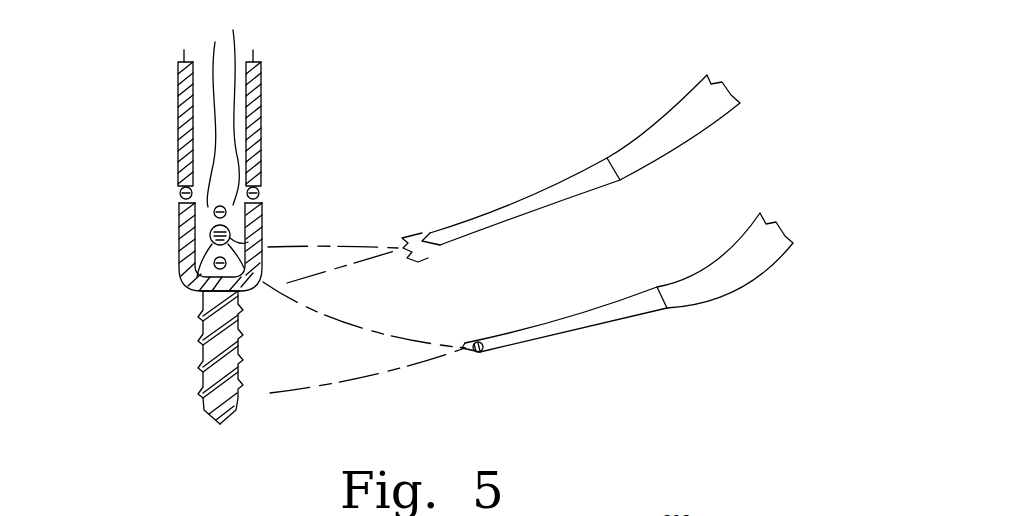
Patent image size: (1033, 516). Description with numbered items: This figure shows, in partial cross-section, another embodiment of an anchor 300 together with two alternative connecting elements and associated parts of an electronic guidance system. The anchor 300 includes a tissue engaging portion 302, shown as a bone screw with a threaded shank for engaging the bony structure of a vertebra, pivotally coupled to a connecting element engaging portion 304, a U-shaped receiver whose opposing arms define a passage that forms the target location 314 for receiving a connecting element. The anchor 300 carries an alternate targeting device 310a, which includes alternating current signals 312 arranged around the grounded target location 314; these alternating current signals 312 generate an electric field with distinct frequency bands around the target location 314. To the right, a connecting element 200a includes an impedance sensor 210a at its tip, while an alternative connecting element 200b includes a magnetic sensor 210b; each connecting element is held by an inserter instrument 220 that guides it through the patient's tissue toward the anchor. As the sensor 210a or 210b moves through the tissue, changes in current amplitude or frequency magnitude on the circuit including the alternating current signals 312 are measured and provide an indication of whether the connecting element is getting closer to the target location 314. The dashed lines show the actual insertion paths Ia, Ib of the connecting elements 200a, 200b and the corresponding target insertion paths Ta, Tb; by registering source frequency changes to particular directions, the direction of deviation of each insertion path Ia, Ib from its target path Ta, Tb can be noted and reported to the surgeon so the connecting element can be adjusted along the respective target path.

The anchor 300 is at (172, 270).
The tissue engaging portion 302 is at (207, 378).
The connecting element engaging portion 304 is at (210, 237).
The alternate targeting device 310a is at (202, 228).
The alternating current signals 312 is at (181, 189).
The target location 314 is at (200, 275).
The connecting element 200a is at (522, 198).
The connecting element 200b is at (548, 336).
The impedance sensor 210a is at (415, 213).
The magnetic sensor 210b is at (475, 322).
The inserter instrument 220 is at (648, 123).
The target insertion path Ta is at (292, 244).
The target insertion path Tb is at (383, 332).
The insertion path Ia is at (256, 284).
The insertion path Ib is at (357, 380).